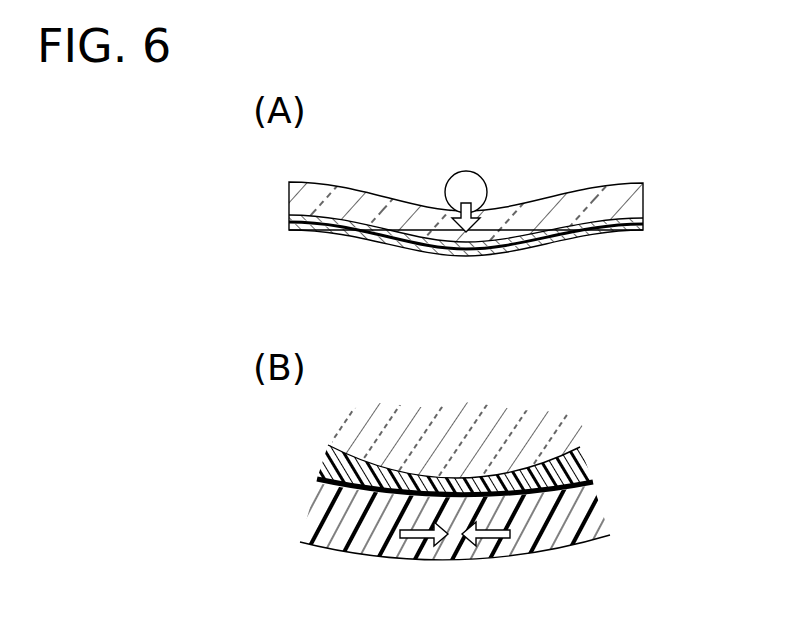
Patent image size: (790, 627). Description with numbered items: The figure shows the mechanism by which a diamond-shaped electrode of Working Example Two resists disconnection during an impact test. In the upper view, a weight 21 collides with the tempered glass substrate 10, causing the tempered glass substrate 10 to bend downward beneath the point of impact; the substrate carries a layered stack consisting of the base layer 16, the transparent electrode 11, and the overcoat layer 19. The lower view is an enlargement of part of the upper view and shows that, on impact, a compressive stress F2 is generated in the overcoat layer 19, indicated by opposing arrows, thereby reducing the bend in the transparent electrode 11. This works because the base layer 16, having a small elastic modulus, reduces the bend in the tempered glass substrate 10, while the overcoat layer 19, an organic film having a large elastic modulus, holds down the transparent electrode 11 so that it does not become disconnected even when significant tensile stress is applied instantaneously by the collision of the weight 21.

In FIG. 6A, the tempered glass substrate 10 is at (637, 191).
In FIG. 6B, the tempered glass substrate 10 is at (580, 430).
In FIG. 6A, the base layer 16 is at (640, 221).
In FIG. 6B, the base layer 16 is at (583, 467).
In FIG. 6A, the transparent electrode 11 is at (628, 234).
In FIG. 6B, the transparent electrode 11 is at (593, 482).
In FIG. 6A, the overcoat layer 19 is at (584, 235).
In FIG. 6B, the overcoat layer 19 is at (607, 520).
In FIG. 6A, the weight 21 is at (444, 190).
In FIG. 6B, the compressive stress F2 is at (500, 540).